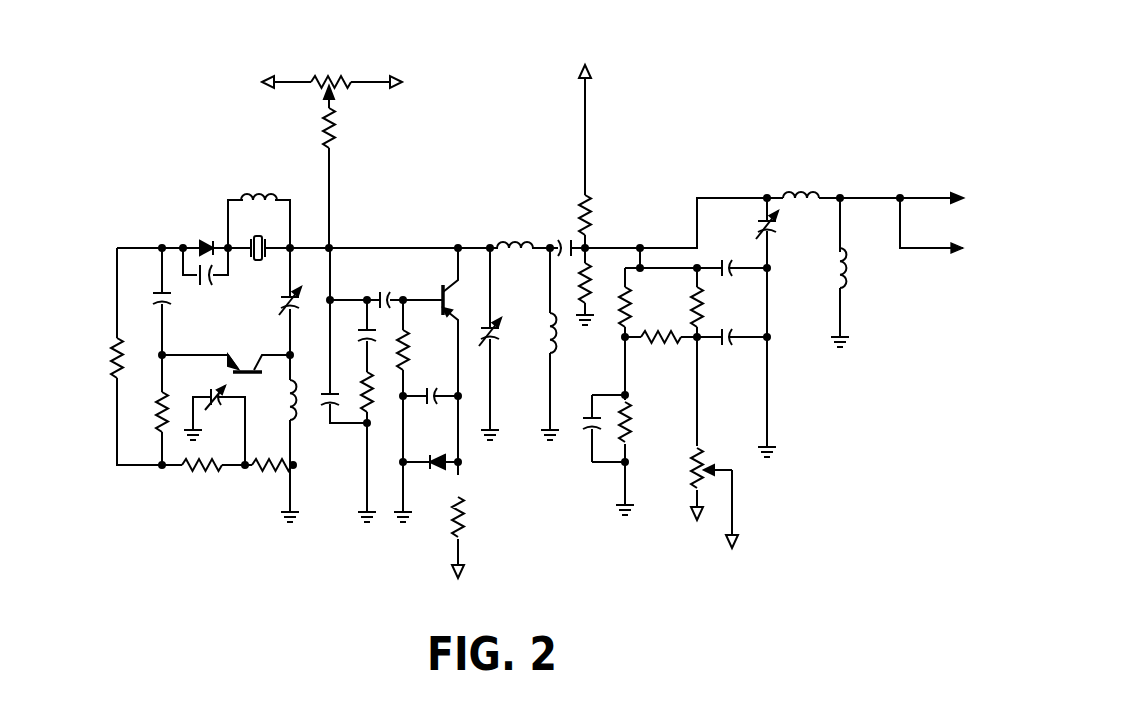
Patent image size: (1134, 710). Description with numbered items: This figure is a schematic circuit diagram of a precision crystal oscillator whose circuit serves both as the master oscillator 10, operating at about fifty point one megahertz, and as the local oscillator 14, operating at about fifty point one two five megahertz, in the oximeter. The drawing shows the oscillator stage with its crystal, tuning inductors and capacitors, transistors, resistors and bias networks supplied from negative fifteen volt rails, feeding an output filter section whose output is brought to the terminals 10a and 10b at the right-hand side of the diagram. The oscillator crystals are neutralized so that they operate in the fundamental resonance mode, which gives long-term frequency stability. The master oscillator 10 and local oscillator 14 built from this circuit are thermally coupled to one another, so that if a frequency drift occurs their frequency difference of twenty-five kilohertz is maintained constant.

The master oscillator 10 is at (525, 326).
The local oscillator 14 is at (730, 146).
The first output terminal 10a is at (923, 198).
The second output terminal 10b is at (923, 248).